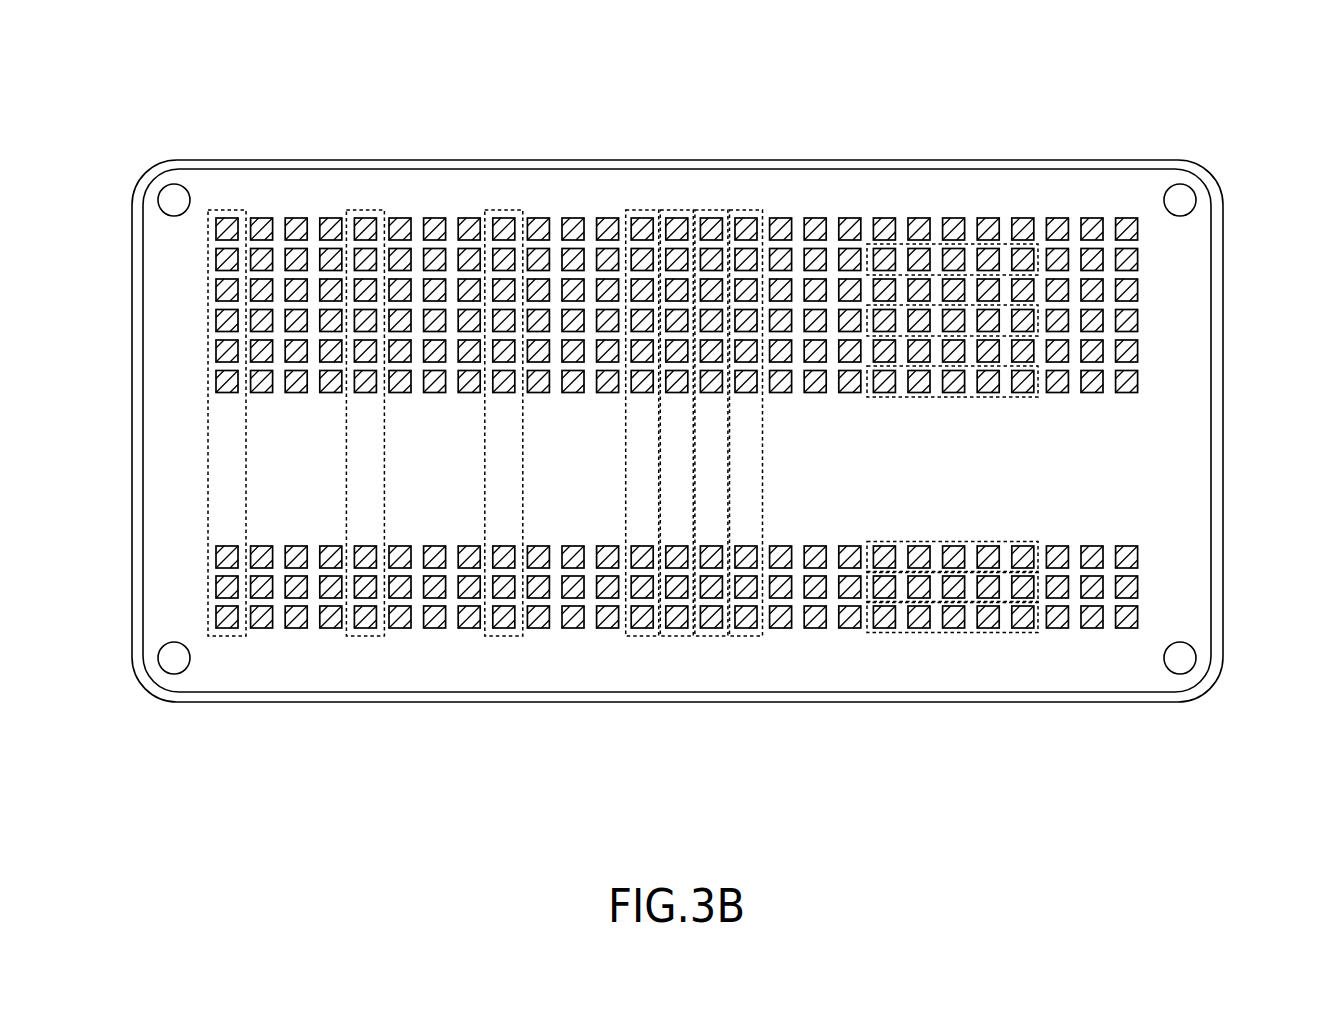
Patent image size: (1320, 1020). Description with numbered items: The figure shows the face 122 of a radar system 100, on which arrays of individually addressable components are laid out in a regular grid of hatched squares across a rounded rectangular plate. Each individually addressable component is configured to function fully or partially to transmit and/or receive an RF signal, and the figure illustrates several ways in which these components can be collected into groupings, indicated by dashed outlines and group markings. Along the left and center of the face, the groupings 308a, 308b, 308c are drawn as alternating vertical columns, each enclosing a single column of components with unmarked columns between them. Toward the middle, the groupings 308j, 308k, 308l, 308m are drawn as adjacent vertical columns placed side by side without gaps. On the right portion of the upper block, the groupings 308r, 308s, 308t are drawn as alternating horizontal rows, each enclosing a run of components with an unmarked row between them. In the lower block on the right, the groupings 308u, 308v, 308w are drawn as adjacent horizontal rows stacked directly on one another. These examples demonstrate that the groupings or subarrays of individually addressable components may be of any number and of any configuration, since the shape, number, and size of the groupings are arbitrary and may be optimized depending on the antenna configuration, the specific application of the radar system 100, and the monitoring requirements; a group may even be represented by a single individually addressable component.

The radar system 100 is at (207, 40).
The face 122 is at (172, 162).
The grouping 308a is at (227, 386).
The grouping 308b is at (365, 386).
The grouping 308c is at (503, 386).
The grouping 308j is at (636, 191).
The grouping 308k is at (671, 186).
The grouping 308l is at (713, 186).
The grouping 308m is at (759, 187).
The grouping 308r is at (1162, 260).
The grouping 308s is at (1162, 320).
The grouping 308t is at (1162, 380).
The grouping 308u is at (1162, 557).
The grouping 308v is at (1162, 588).
The grouping 308w is at (1162, 618).